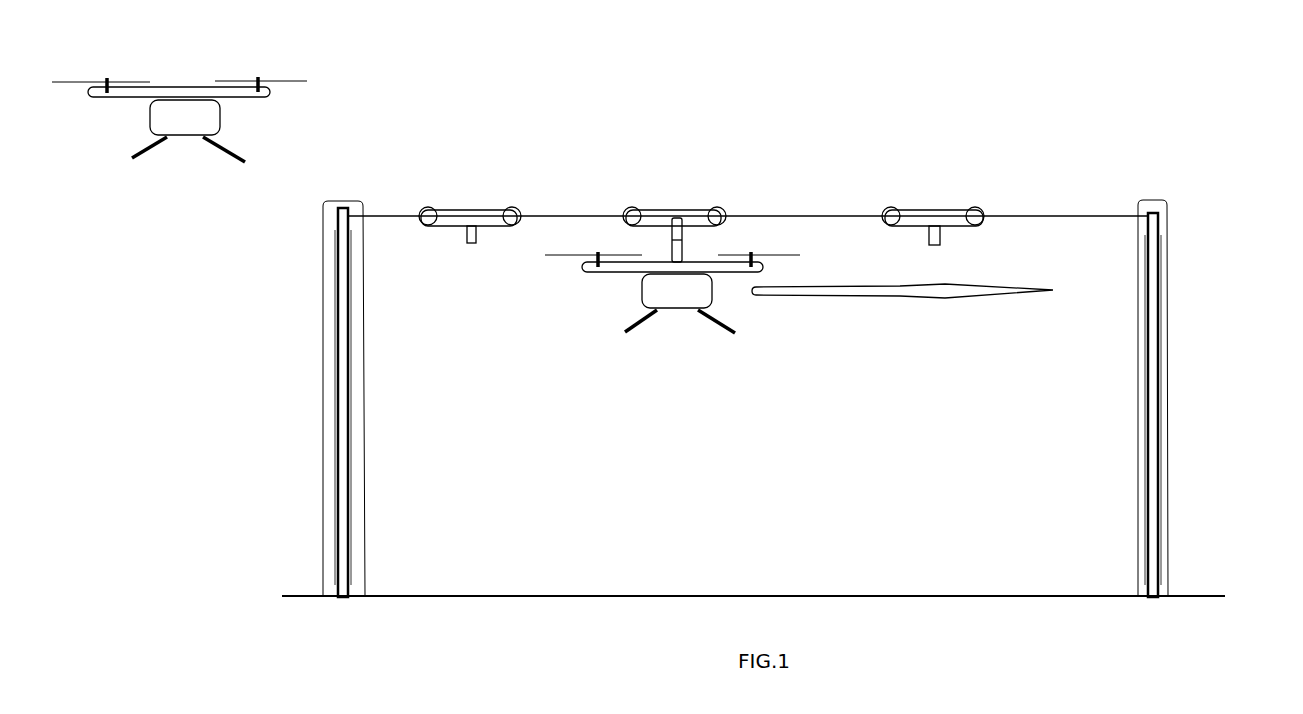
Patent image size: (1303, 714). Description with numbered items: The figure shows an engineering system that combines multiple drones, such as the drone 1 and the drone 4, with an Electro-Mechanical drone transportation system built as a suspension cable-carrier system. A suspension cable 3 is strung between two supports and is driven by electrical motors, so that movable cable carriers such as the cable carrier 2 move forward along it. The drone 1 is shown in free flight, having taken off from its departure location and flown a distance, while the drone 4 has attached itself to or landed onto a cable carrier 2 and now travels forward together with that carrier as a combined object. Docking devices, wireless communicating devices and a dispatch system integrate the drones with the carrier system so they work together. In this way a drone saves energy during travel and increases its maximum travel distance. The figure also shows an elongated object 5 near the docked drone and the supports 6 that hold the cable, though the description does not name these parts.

The drone 1 is at (203, 115).
The cable carrier 2 is at (677, 211).
The cable 3 is at (1067, 212).
The drone 4 is at (672, 314).
The elongated payload 5 is at (902, 304).
The support pole 6 is at (1162, 352).